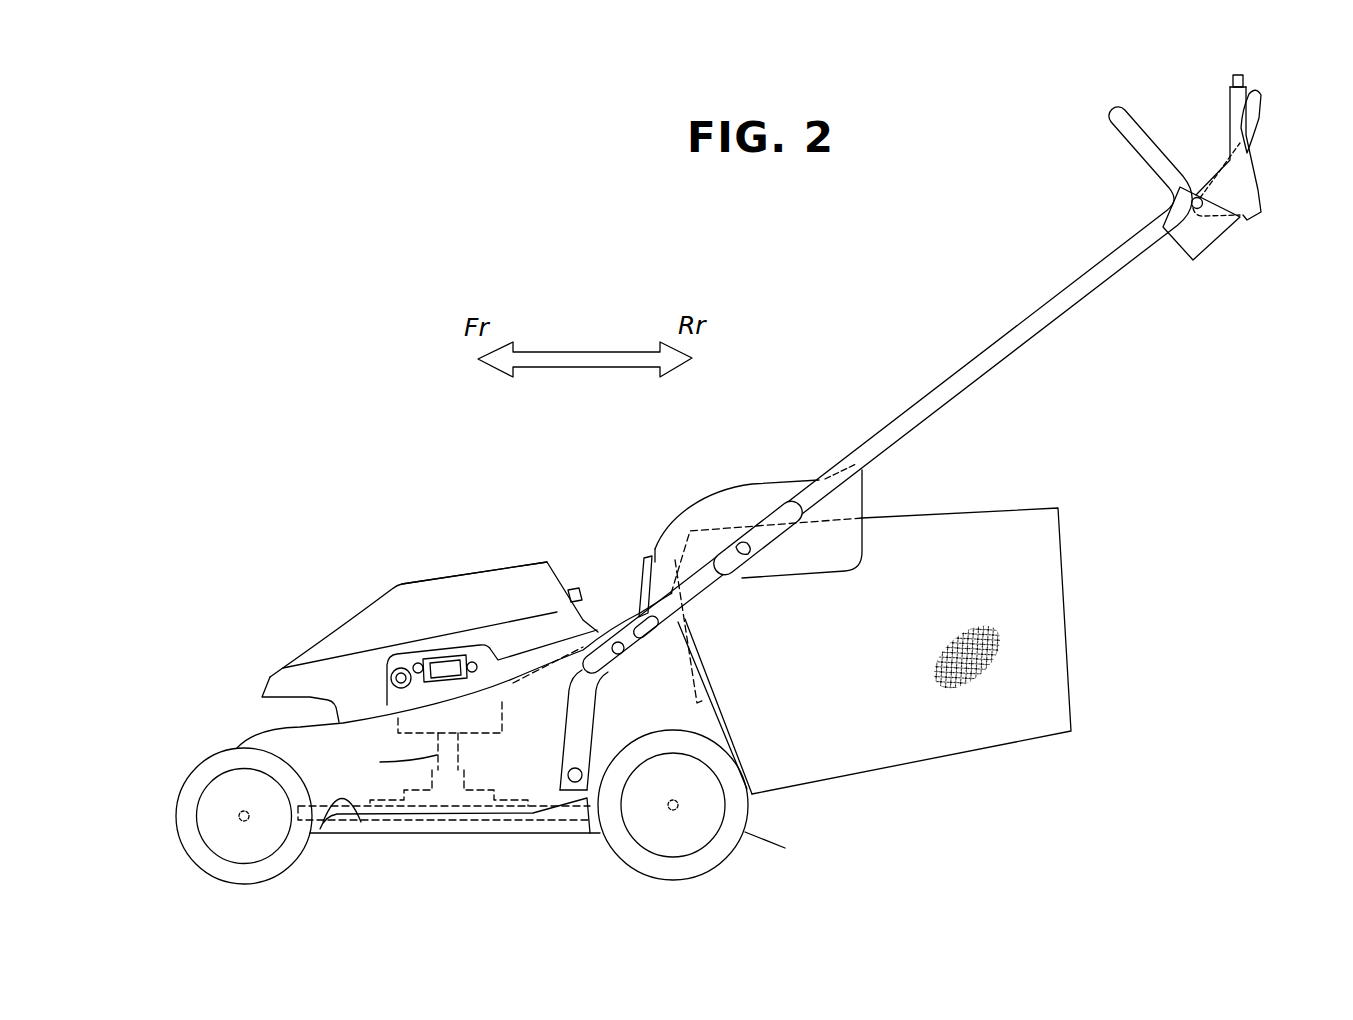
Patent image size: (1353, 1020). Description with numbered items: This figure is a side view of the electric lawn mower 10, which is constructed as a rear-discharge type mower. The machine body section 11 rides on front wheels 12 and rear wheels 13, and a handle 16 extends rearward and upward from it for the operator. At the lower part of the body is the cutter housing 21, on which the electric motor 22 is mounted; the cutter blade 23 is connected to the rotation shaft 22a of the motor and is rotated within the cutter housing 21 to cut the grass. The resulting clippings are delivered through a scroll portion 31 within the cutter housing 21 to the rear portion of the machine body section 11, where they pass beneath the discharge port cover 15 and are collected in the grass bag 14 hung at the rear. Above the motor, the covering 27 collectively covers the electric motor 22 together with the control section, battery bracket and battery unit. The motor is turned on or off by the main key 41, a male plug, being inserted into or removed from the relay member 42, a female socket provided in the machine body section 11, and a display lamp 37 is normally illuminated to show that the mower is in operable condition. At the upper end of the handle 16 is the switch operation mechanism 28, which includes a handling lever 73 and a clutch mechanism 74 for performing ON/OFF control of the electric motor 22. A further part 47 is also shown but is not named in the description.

The electric lawn mower 10 is at (386, 175).
The machine body section 11 is at (412, 555).
The front wheels 12 is at (200, 758).
The rear wheels 13 is at (736, 845).
The grass bag 14 is at (1062, 586).
The discharge port cover 15 is at (745, 488).
The handle 16 is at (1016, 327).
The cutter housing 21 is at (246, 714).
The electric motor 22 is at (370, 740).
The rotation shaft 22a is at (380, 762).
The cutter blade 23 is at (358, 805).
The covering 27 is at (497, 565).
The switch operation mechanism 28 is at (1230, 262).
The scroll portion 31 is at (603, 633).
The display lamp 37 is at (580, 600).
The main key 41 is at (452, 657).
The relay member 42 is at (413, 660).
The front cover portion 47 is at (305, 708).
The handling lever 73 is at (1262, 118).
The clutch mechanism 74 is at (1232, 102).